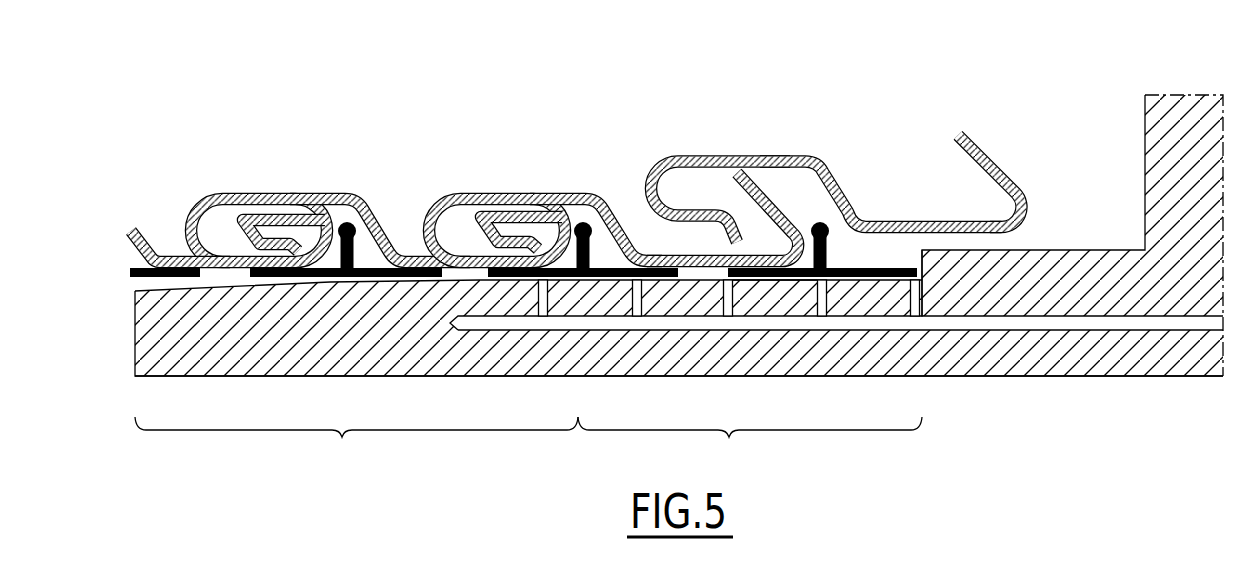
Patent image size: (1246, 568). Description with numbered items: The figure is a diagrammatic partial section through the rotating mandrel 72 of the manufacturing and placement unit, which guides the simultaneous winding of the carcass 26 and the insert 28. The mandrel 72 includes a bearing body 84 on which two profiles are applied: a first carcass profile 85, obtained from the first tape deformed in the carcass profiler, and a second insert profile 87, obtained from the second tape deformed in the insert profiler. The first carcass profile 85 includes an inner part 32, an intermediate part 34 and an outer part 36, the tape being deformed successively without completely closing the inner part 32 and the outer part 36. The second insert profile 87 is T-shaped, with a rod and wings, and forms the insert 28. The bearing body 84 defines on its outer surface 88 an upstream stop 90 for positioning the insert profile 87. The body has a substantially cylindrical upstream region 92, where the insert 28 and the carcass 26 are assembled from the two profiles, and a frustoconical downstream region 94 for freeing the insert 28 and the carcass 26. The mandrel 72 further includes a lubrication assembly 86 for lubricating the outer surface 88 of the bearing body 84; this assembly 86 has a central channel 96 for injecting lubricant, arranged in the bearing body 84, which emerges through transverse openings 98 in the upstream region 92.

The carcass 26 is at (591, 155).
The insert 28 is at (639, 352).
The inner part 32 is at (651, 255).
The intermediate part 34 is at (833, 162).
The outer part 36 is at (695, 158).
The mandrel 72 is at (1059, 200).
The bearing body 84 is at (305, 338).
The first carcass profile 85 is at (779, 137).
The lubrication assembly 86 is at (1106, 386).
The second insert profile 87 is at (765, 292).
The outer surface 88 is at (142, 291).
The upstream stop 90 is at (917, 250).
The upstream region 92 is at (750, 442).
The downstream region 94 is at (356, 442).
The central channel 96 is at (1018, 322).
The transverse openings 98 is at (912, 302).